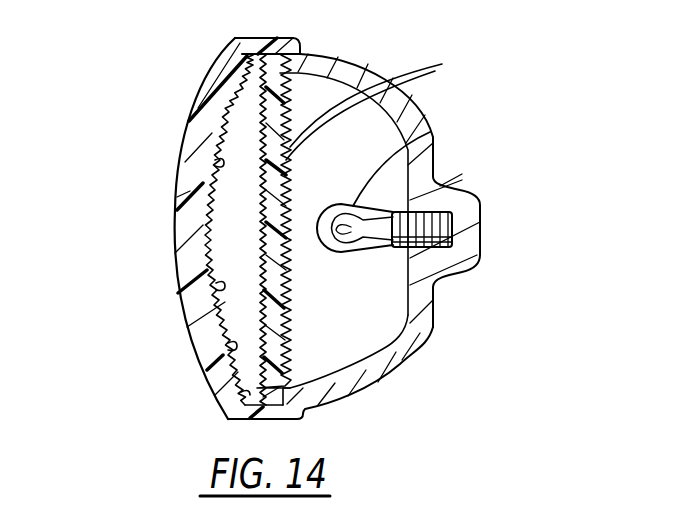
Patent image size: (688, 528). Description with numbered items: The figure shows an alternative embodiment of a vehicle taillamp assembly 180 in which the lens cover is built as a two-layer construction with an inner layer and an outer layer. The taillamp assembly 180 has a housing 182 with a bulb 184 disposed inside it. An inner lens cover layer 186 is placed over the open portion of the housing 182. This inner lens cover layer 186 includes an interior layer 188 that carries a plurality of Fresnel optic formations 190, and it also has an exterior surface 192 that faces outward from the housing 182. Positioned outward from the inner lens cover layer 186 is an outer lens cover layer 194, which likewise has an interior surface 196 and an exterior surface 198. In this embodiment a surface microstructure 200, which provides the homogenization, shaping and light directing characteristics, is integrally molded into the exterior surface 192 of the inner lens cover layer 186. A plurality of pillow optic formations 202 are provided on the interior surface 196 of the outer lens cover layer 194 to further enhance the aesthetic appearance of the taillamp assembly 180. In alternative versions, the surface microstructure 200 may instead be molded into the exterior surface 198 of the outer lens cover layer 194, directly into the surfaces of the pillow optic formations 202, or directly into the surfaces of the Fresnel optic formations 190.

The taillamp assembly 180 is at (462, 92).
The housing 182 is at (435, 325).
The bulb 184 is at (434, 140).
The inner lens cover layer 186 is at (284, 322).
The interior layer 188 is at (322, 92).
The Fresnel optic formations 190 is at (376, 102).
The exterior surface 192 is at (258, 123).
The outer lens cover layer 194 is at (177, 235).
The interior surface 196 is at (185, 162).
The exterior surface 198 is at (178, 197).
The surface microstructure 200 is at (262, 366).
The pillow optic formations 202 is at (193, 303).